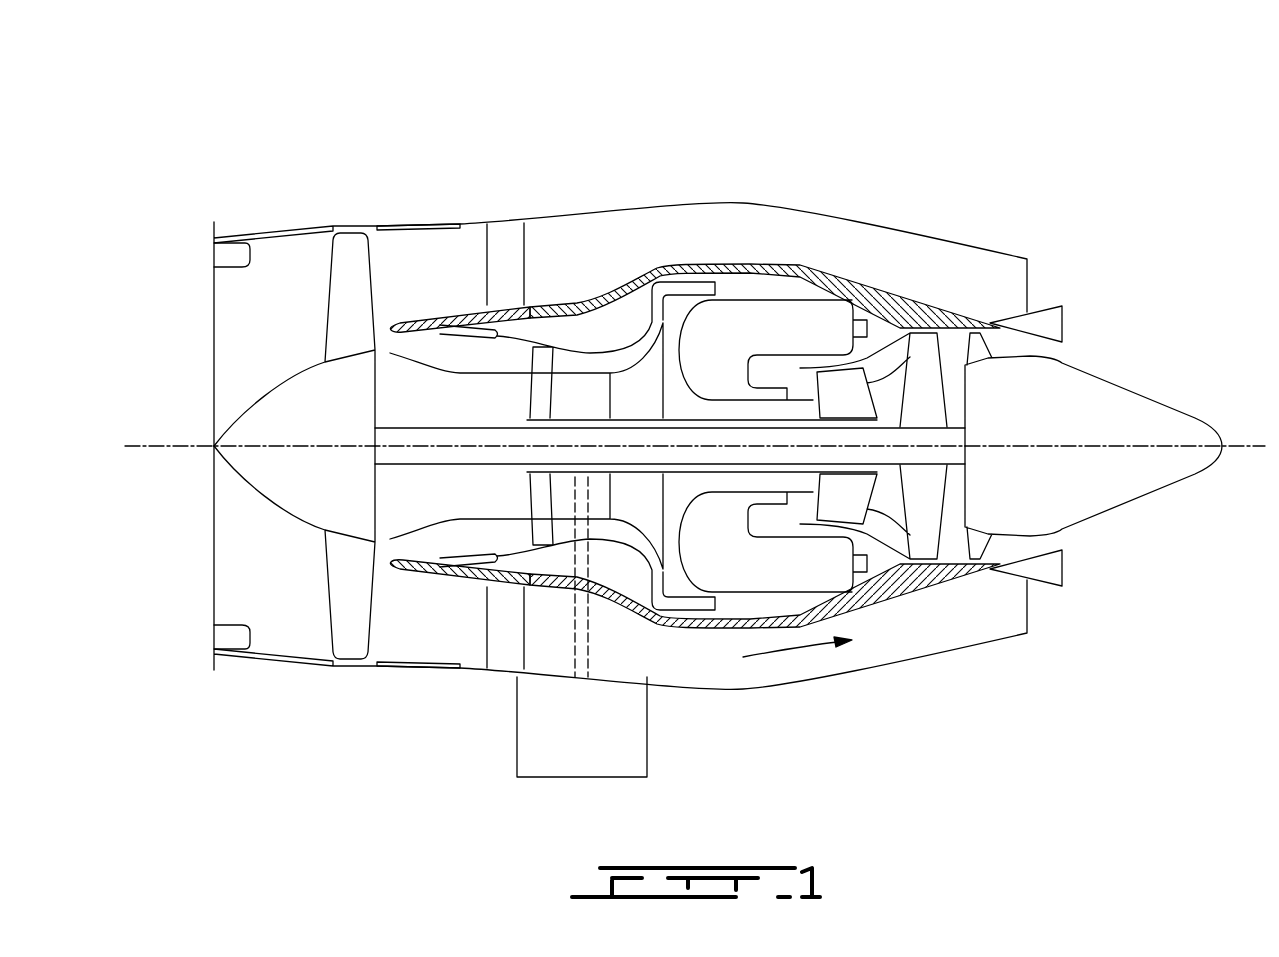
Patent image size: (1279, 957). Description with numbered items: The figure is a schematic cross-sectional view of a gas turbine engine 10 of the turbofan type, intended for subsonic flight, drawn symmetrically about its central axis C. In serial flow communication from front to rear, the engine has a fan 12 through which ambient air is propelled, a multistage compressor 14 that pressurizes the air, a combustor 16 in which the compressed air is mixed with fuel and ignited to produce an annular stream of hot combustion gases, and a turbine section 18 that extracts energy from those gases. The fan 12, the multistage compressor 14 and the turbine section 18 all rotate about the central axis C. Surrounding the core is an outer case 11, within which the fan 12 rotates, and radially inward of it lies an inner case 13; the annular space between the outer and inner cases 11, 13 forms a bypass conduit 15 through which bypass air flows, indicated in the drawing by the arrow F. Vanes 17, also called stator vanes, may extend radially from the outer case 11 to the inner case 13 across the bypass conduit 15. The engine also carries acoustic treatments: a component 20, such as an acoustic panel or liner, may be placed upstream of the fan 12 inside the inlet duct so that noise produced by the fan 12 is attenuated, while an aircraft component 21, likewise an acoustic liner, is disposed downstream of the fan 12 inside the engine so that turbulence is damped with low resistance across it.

The gas turbine engine 10 is at (907, 162).
The outer case 11 is at (750, 690).
The fan 12 is at (347, 583).
The inner case 13 is at (920, 300).
The multistage compressor 14 is at (583, 357).
The bypass conduit 15 is at (405, 292).
The combustor 16 is at (766, 325).
The vanes 17 is at (507, 247).
The turbine section 18 is at (884, 505).
The component 20 is at (213, 267).
The aircraft component 21 is at (417, 224).
The bypass airflow F is at (798, 653).
The central axis C is at (1250, 450).